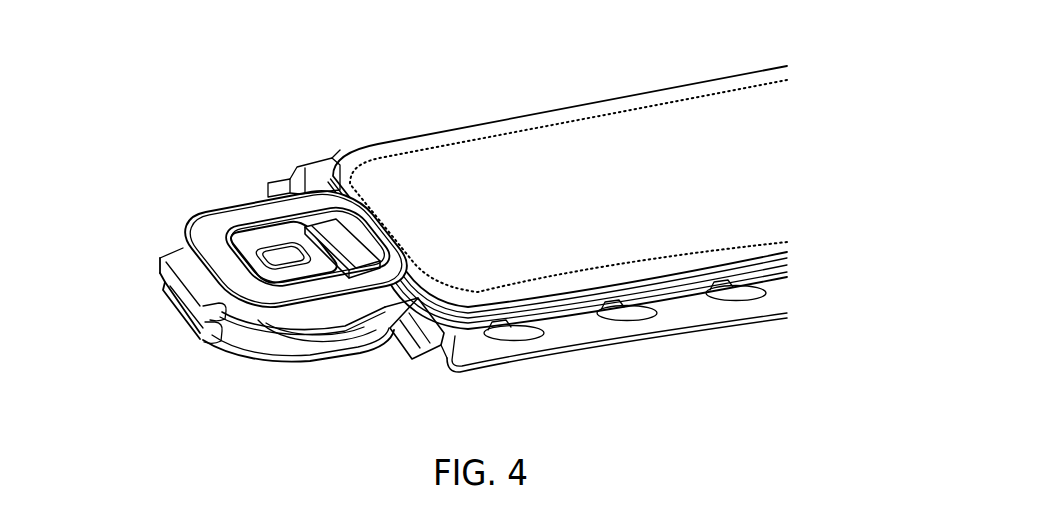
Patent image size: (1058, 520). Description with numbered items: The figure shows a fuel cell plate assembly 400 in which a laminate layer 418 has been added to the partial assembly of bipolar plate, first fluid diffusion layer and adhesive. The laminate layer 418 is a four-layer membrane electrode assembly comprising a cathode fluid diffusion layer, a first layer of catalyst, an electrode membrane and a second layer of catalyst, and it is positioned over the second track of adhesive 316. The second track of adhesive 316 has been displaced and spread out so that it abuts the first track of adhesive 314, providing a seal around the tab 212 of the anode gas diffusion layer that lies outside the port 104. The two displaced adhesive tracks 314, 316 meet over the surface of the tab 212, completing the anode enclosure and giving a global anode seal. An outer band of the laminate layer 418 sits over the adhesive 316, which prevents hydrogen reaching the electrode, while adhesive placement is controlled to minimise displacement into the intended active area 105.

The active area 105 is at (700, 97).
The laminate layer 418 is at (433, 178).
The first track of adhesive 314 is at (233, 207).
The tab 212 is at (335, 243).
The port 104 is at (307, 283).
The second track of adhesive 316 is at (510, 311).
The fuel cell plate assembly 400 is at (167, 351).